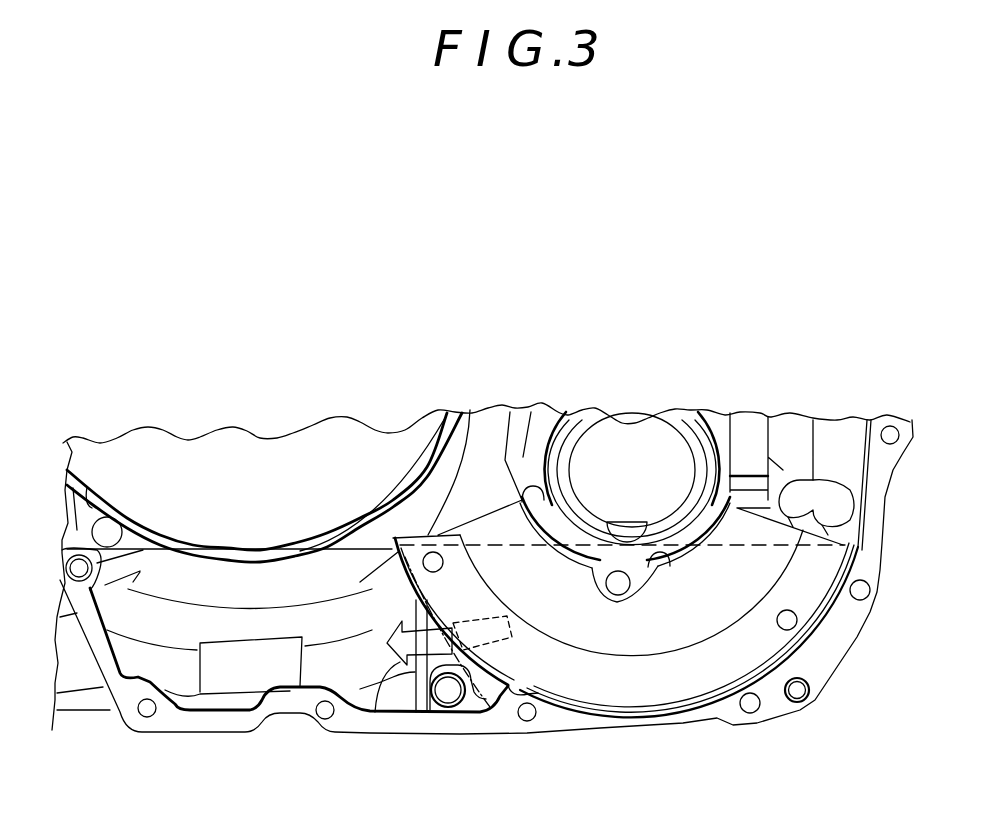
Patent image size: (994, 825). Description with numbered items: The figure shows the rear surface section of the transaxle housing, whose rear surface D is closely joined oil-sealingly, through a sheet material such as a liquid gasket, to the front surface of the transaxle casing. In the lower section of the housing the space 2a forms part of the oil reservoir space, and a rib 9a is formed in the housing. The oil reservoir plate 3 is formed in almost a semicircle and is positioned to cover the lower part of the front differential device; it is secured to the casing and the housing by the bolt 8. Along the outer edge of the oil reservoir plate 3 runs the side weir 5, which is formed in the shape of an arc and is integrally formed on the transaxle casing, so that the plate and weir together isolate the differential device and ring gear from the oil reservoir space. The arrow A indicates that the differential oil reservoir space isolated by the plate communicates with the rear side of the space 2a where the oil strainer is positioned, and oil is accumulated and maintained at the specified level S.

The oil reservoir plate 3 is at (670, 678).
The side weir 5 is at (487, 702).
The bolt 8 is at (440, 571).
The rib 9a is at (400, 683).
The space 2a is at (190, 677).
The arrow A is at (386, 700).
The rear surface D is at (187, 733).
The oil level S is at (376, 540).